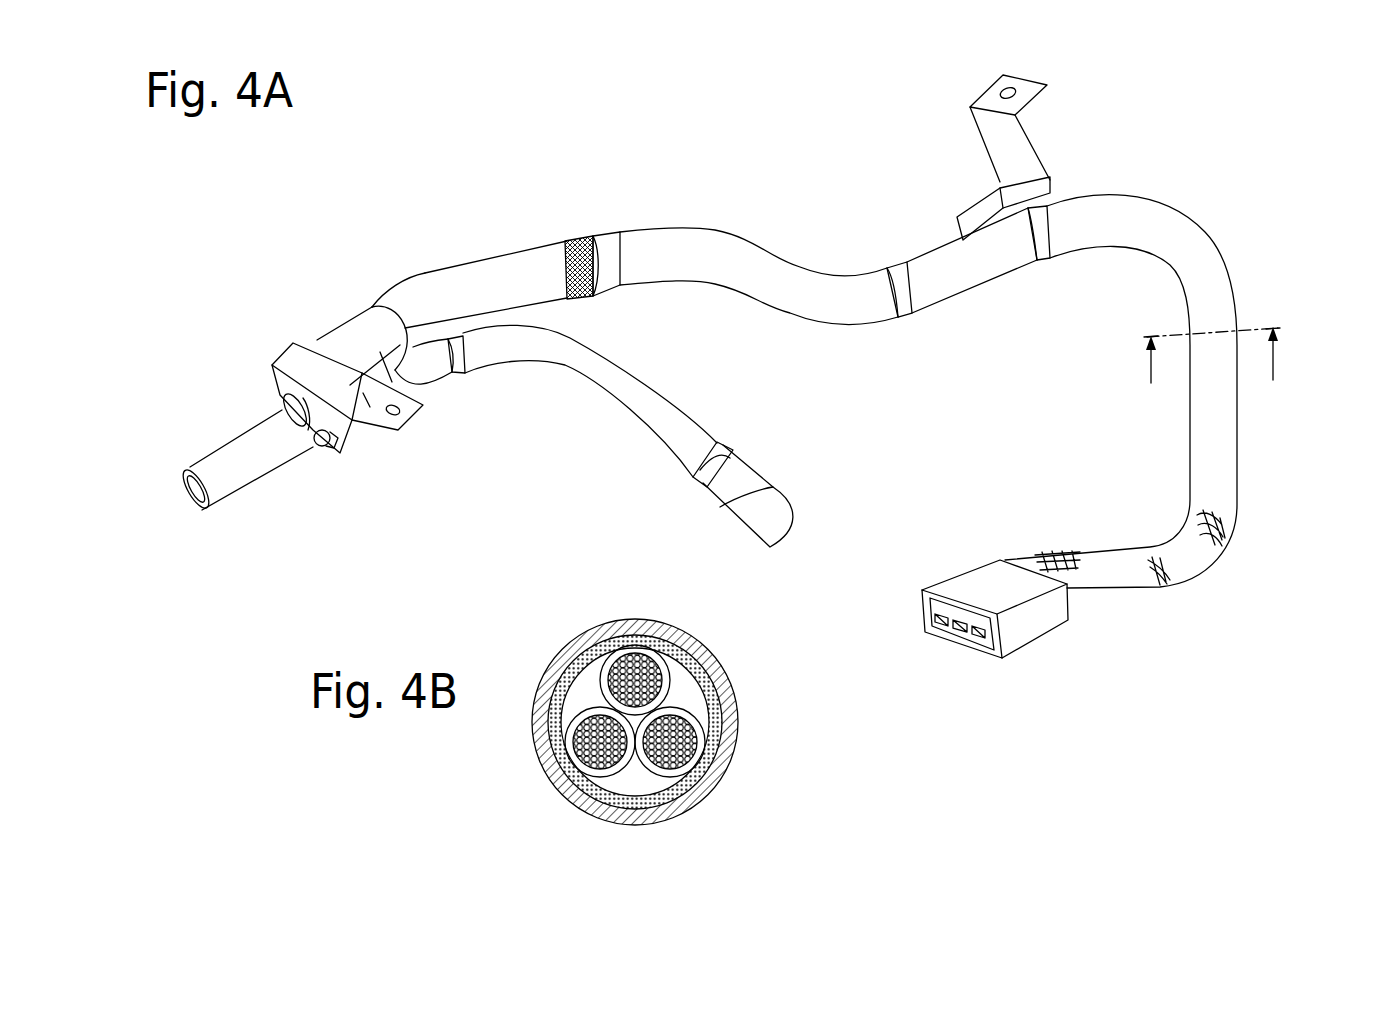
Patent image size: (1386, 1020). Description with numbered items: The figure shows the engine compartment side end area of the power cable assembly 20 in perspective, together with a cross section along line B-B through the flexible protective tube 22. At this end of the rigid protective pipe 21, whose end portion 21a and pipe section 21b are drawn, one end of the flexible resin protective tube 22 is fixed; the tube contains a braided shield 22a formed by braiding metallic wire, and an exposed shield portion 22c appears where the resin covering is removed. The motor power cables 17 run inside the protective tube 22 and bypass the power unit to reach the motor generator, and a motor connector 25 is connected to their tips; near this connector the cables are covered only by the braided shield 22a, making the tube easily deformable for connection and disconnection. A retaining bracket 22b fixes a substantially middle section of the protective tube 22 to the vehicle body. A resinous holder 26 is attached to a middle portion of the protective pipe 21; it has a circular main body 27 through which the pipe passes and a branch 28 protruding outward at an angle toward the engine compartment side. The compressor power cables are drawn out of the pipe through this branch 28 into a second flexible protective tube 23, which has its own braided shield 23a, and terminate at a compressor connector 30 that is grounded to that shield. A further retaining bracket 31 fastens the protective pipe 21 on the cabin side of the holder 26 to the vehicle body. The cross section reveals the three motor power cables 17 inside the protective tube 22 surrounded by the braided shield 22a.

In FIG. 4A, the wire harness 20 is at (627, 106).
In FIG. 4A, the protective pipe 21 is at (417, 268).
In FIG. 4A, the first tube end 21a is at (228, 443).
In FIG. 4A, the upper tube portion 21b is at (470, 267).
In FIG. 4A, the protective tube 22 is at (1237, 420).
In FIG. 4B, the protective tube 22 is at (732, 673).
In FIG. 4A, the braided shield 22a is at (1197, 566).
In FIG. 4B, the braided shield 22a is at (727, 760).
In FIG. 4A, the retaining bracket 22b is at (1035, 138).
In FIG. 4A, the braid exposed portion 22c is at (585, 238).
In FIG. 4A, the protective tube 23 is at (652, 430).
In FIG. 4A, the braided shield 23a is at (588, 368).
In FIG. 4A, the motor connector 25 is at (1022, 650).
In FIG. 4A, the holder 26 is at (355, 296).
In FIG. 4A, the main body 27 is at (355, 338).
In FIG. 4A, the branch 28 is at (433, 373).
In FIG. 4A, the compressor connector 30 is at (758, 457).
In FIG. 4A, the retaining bracket 31 is at (380, 435).
In FIG. 4B, the motor power cables 17 is at (598, 677).